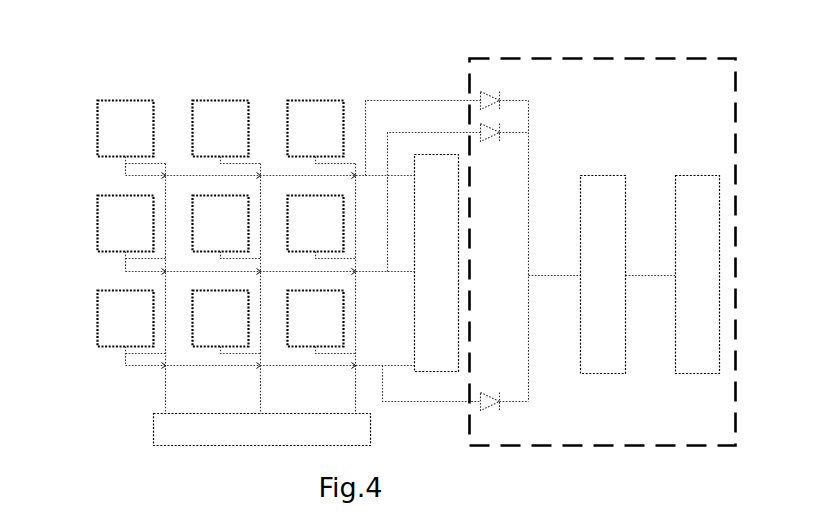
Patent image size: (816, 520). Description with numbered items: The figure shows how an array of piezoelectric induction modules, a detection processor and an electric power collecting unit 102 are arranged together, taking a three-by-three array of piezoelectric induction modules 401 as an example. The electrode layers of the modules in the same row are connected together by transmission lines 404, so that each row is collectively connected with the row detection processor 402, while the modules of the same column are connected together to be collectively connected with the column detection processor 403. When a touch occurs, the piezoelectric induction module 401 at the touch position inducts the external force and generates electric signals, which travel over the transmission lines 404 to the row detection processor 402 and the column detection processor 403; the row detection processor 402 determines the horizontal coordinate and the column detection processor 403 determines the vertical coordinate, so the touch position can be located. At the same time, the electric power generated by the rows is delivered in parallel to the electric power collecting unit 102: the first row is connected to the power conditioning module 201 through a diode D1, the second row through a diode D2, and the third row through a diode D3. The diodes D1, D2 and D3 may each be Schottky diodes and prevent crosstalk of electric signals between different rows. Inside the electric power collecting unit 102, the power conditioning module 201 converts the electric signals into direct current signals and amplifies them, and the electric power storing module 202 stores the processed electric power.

The electric power collecting unit 102 is at (603, 59).
The power conditioning module 201 is at (603, 177).
The electric power storing module 202 is at (697, 177).
The piezoelectric induction module 401 is at (192, 102).
The row detection processor 402 is at (458, 265).
The column detection processor 403 is at (153, 430).
The transmission line 404 is at (125, 177).
The diode D1 is at (491, 85).
The diode D2 is at (491, 149).
The diode D3 is at (491, 418).